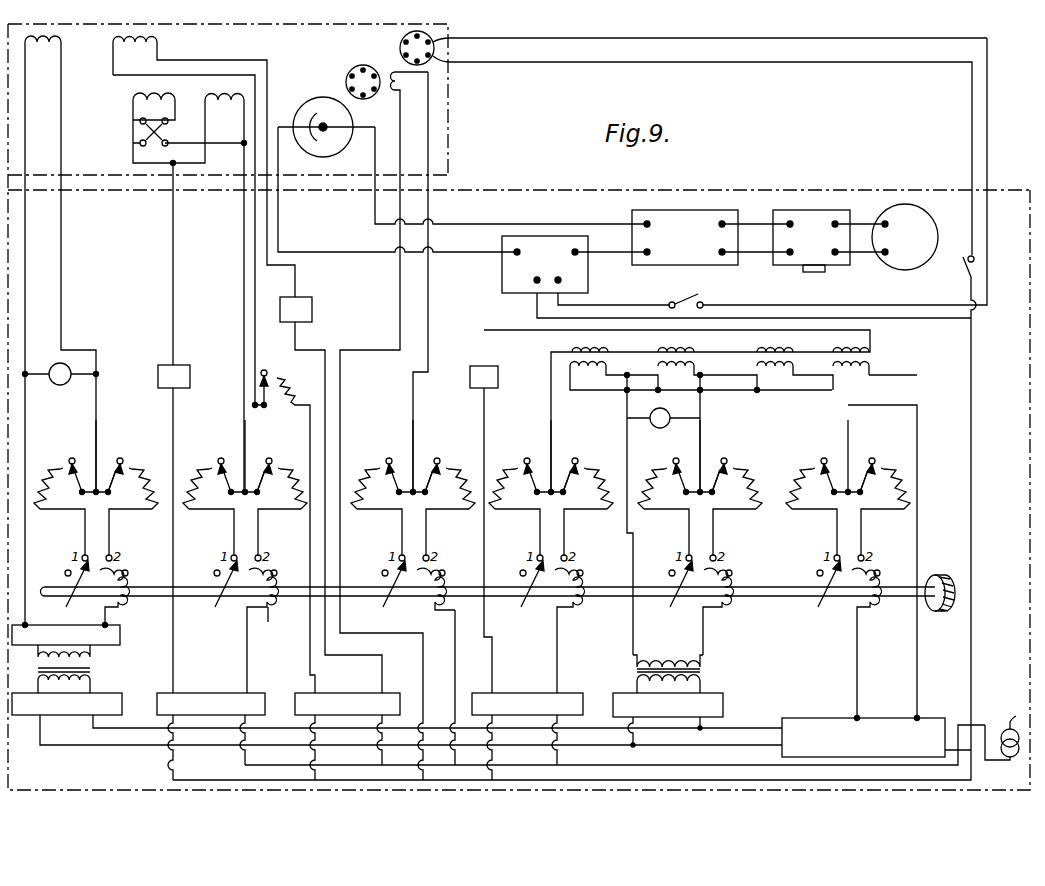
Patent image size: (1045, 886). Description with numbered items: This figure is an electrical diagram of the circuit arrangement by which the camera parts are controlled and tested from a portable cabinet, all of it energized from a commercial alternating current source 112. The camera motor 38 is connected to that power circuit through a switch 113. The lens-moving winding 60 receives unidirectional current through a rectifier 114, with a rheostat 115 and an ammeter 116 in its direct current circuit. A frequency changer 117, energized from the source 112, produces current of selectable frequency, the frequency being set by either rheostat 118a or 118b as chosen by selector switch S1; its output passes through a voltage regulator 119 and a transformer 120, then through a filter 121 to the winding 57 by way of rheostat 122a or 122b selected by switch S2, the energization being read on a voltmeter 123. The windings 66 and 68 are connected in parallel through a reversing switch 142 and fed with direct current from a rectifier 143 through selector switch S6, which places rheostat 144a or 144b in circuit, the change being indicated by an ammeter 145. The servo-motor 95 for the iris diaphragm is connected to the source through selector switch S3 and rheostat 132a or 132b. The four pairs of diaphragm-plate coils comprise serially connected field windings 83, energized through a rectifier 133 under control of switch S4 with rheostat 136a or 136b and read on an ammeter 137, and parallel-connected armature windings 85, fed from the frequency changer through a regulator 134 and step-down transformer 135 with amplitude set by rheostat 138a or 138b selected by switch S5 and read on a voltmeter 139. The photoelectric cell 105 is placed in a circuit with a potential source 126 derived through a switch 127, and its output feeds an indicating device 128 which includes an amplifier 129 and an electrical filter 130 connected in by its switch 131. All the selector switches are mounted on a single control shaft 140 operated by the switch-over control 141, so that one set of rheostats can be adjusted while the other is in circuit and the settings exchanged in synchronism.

The winding 57 is at (60, 330).
The winding 60 is at (204, 221).
The winding 68 is at (169, 222).
The winding 66 is at (206, 286).
The reversing switch 142 is at (133, 129).
The photoelectric cell 105 is at (347, 109).
The servo-motor 95 is at (380, 82).
The camera motor 38 is at (681, 143).
The amplifier 129 is at (703, 206).
The electrical filter 130 is at (818, 207).
The switch 131 is at (826, 276).
The indicating device 128 is at (912, 222).
The source of potential 126 is at (574, 264).
The switch 127 is at (688, 300).
The switch 113 is at (952, 274).
The ammeter 116 is at (312, 310).
The ammeter 145 is at (163, 366).
The rheostat 115 is at (282, 392).
The voltmeter 123 is at (52, 388).
The ammeter 137 is at (498, 378).
The field windings 83 is at (736, 353).
The armature windings 85 is at (736, 376).
The voltmeter 139 is at (660, 406).
The rheostat 122a is at (94, 500).
The rheostat 122b is at (129, 466).
The rheostat 144a is at (245, 498).
The rheostat 144b is at (278, 466).
The rheostat 132a is at (413, 498).
The rheostat 132b is at (446, 466).
The rheostat 136a is at (551, 498).
The rheostat 136b is at (584, 466).
The rheostat 138a is at (700, 498).
The rheostat 138b is at (733, 466).
The rheostat 118a is at (846, 503).
The rheostat 118b is at (881, 466).
The selector switch S1 is at (844, 639).
The selector switch S2 is at (89, 593).
The selector switch S3 is at (412, 590).
The selector switch S4 is at (546, 627).
The selector switch S5 is at (695, 608).
The selector switch S6 is at (239, 627).
The control shaft 140 is at (277, 604).
The switch-over control 141 is at (941, 618).
The filter 121 is at (120, 638).
The transformer 120 is at (93, 665).
The voltage regulator 119 is at (93, 691).
The rectifier 143 is at (180, 692).
The rectifier 114 is at (318, 692).
The rectifier 133 is at (503, 692).
The step-down transformer 135 is at (702, 667).
The regulator 134 is at (708, 693).
The frequency changer 117 is at (802, 722).
The alternating current source 112 is at (1006, 730).